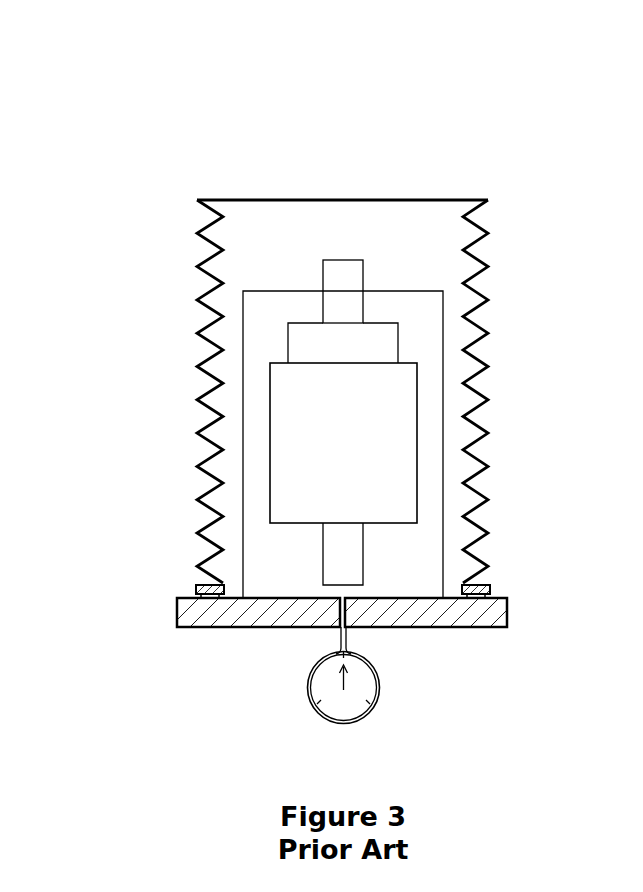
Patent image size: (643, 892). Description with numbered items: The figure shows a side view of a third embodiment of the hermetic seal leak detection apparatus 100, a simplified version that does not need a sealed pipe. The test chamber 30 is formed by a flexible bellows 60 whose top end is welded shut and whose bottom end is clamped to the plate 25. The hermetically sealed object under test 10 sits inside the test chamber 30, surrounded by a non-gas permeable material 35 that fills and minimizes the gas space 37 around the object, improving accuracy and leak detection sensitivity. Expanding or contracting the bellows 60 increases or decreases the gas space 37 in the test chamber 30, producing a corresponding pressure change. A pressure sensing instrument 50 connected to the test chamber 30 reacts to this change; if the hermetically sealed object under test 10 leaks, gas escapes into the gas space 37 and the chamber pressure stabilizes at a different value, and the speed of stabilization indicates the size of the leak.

The hermetic seal leak detection apparatus 100 is at (333, 58).
The hermetically sealed object under test 10 is at (287, 415).
The plate 25 is at (460, 627).
The test chamber 30 is at (235, 530).
The non-gas permeable material 35 is at (417, 323).
The gas space 37 is at (258, 223).
The pressure sensing instrument 50 is at (323, 718).
The bellows 60 is at (483, 252).